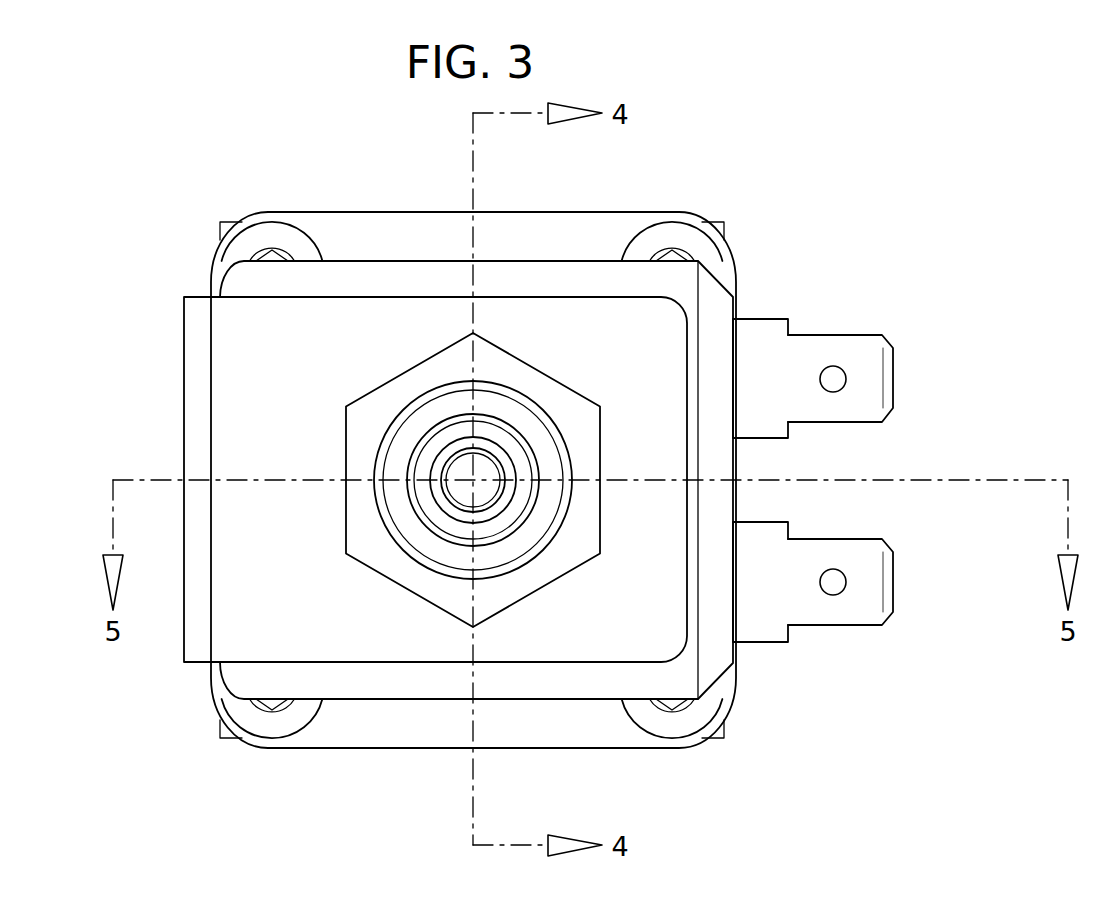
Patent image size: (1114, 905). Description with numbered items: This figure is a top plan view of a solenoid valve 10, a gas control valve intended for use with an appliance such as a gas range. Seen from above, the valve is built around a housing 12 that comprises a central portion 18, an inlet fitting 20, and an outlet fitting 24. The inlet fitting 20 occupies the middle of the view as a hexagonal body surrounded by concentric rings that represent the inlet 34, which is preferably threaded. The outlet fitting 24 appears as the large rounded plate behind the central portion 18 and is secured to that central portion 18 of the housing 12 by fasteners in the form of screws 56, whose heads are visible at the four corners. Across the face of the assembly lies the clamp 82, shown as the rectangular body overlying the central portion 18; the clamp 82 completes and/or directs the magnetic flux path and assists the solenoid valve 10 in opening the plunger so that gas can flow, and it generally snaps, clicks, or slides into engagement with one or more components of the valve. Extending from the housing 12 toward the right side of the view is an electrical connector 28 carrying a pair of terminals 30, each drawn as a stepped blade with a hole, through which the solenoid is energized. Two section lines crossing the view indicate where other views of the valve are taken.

The solenoid valve 10 is at (322, 130).
The housing 12 is at (300, 196).
The central portion 18 is at (353, 683).
The inlet fitting 20 is at (362, 432).
The outlet fitting 24 is at (420, 716).
The electrical connector 28 is at (842, 310).
The terminals 30 is at (895, 379).
The inlet 34 is at (462, 468).
The screws 56 is at (681, 238).
The clamp 82 is at (197, 394).